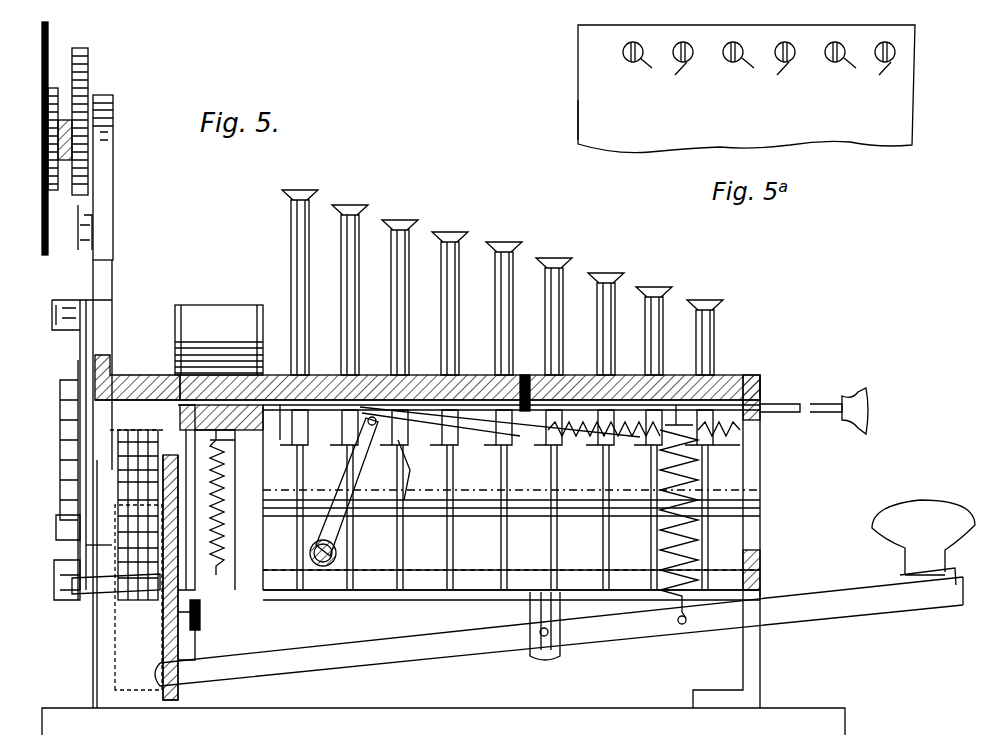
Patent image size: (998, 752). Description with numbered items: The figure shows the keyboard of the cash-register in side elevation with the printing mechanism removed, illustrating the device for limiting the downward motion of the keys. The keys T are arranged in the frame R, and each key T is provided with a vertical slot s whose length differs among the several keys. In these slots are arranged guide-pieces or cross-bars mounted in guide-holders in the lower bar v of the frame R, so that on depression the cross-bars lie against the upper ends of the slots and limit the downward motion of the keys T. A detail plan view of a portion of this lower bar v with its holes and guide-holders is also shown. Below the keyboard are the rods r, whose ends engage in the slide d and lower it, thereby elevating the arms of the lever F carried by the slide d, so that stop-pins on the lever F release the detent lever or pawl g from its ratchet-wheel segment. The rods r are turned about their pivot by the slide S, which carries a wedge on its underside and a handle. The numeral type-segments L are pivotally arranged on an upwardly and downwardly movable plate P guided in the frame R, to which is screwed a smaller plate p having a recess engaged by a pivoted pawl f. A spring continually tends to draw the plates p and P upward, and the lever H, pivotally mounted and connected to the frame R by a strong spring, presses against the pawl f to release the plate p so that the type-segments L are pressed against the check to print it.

In FIG. 5, the key T is at (312, 193).
In FIG. 5, the frame R is at (300, 385).
In FIG. 5, the vertical slot s is at (296, 460).
In FIG. 5, the rod r is at (350, 478).
In FIG. 5, the lever / strong spring F is at (72, 356).
In FIG. 5, the numeral type-segment L is at (124, 430).
In FIG. 5, the smaller plate p is at (224, 478).
In FIG. 5, the detent lever or pawl g is at (60, 526).
In FIG. 5, the slide d is at (86, 548).
In FIG. 5, the plate P is at (165, 618).
In FIG. 5, the pawl f is at (204, 628).
In FIG. 5, the slide S is at (180, 645).
In FIG. 5, the lower bar v is at (480, 588).
In FIG. 5A, the lower bar v is at (633, 120).
In FIG. 5, the lever H is at (820, 612).